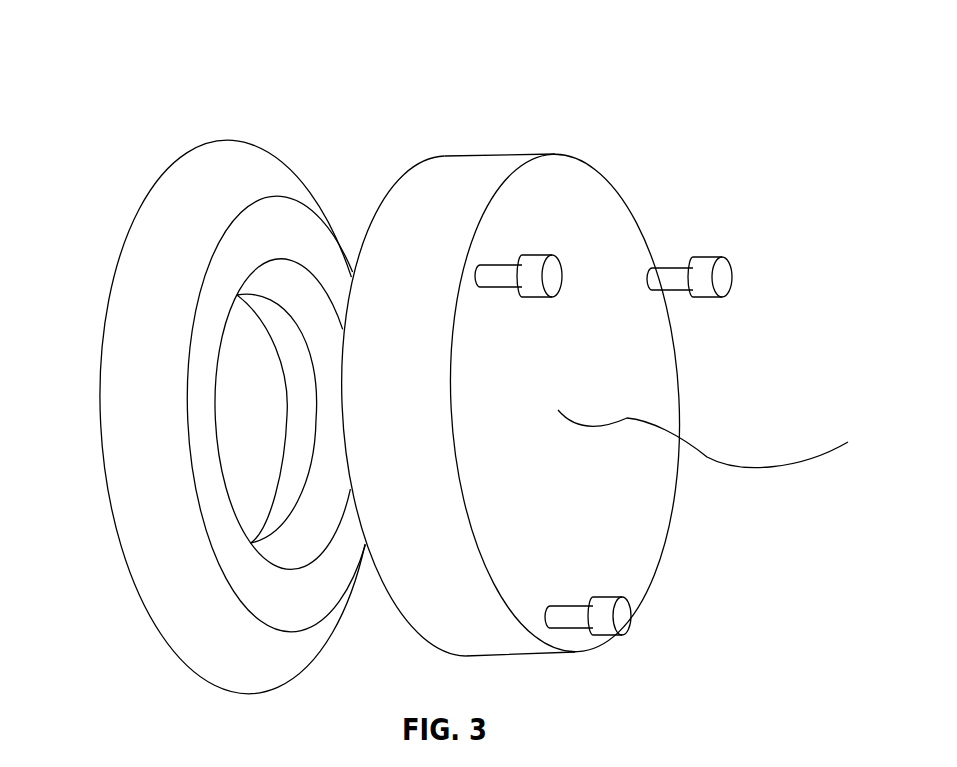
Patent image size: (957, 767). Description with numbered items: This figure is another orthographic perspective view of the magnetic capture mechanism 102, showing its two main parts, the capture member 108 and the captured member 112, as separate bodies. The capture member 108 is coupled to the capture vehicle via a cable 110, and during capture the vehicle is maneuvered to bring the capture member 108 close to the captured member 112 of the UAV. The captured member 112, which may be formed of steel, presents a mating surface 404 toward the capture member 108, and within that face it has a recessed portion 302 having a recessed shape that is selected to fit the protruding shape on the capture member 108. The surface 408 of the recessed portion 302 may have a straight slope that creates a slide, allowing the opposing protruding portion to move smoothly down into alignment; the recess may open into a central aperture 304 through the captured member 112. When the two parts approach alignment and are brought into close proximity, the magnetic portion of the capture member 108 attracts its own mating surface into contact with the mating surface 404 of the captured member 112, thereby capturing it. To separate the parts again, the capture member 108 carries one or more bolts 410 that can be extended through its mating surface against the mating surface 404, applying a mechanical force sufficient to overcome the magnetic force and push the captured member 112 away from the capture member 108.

The magnetic capture mechanism 102 is at (173, 57).
The captured member 112 is at (212, 163).
The mating surface 404 is at (277, 603).
The recessed portion 302 is at (300, 543).
The central aperture 304 is at (262, 397).
The surface 408 is at (327, 505).
The capture member 108 is at (598, 203).
The bolts 410 is at (603, 628).
The cable 110 is at (812, 462).